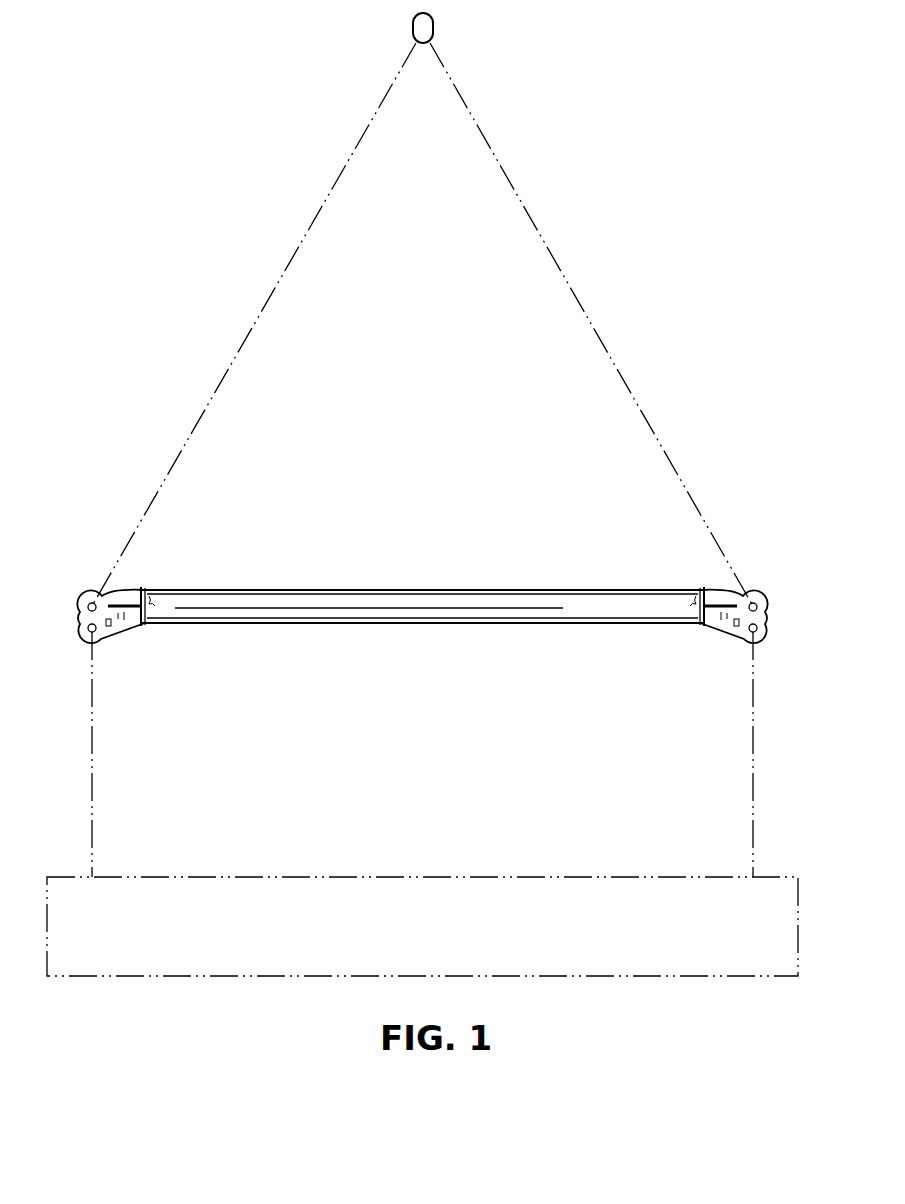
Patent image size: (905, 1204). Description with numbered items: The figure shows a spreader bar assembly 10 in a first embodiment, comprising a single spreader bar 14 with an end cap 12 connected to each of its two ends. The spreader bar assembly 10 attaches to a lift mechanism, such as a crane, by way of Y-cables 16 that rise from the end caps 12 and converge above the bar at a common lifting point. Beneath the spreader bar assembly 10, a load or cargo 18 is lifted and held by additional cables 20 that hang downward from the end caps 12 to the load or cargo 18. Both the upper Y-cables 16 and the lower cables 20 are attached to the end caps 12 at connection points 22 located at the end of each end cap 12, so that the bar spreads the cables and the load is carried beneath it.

The spreader bar assembly 10 is at (160, 155).
The end cap 12 is at (69, 584).
The spreader bar 14 is at (534, 590).
The Y-cables 16 is at (572, 296).
The load or cargo 18 is at (229, 876).
The additional cables 20 is at (92, 773).
The connection points 22 is at (82, 617).